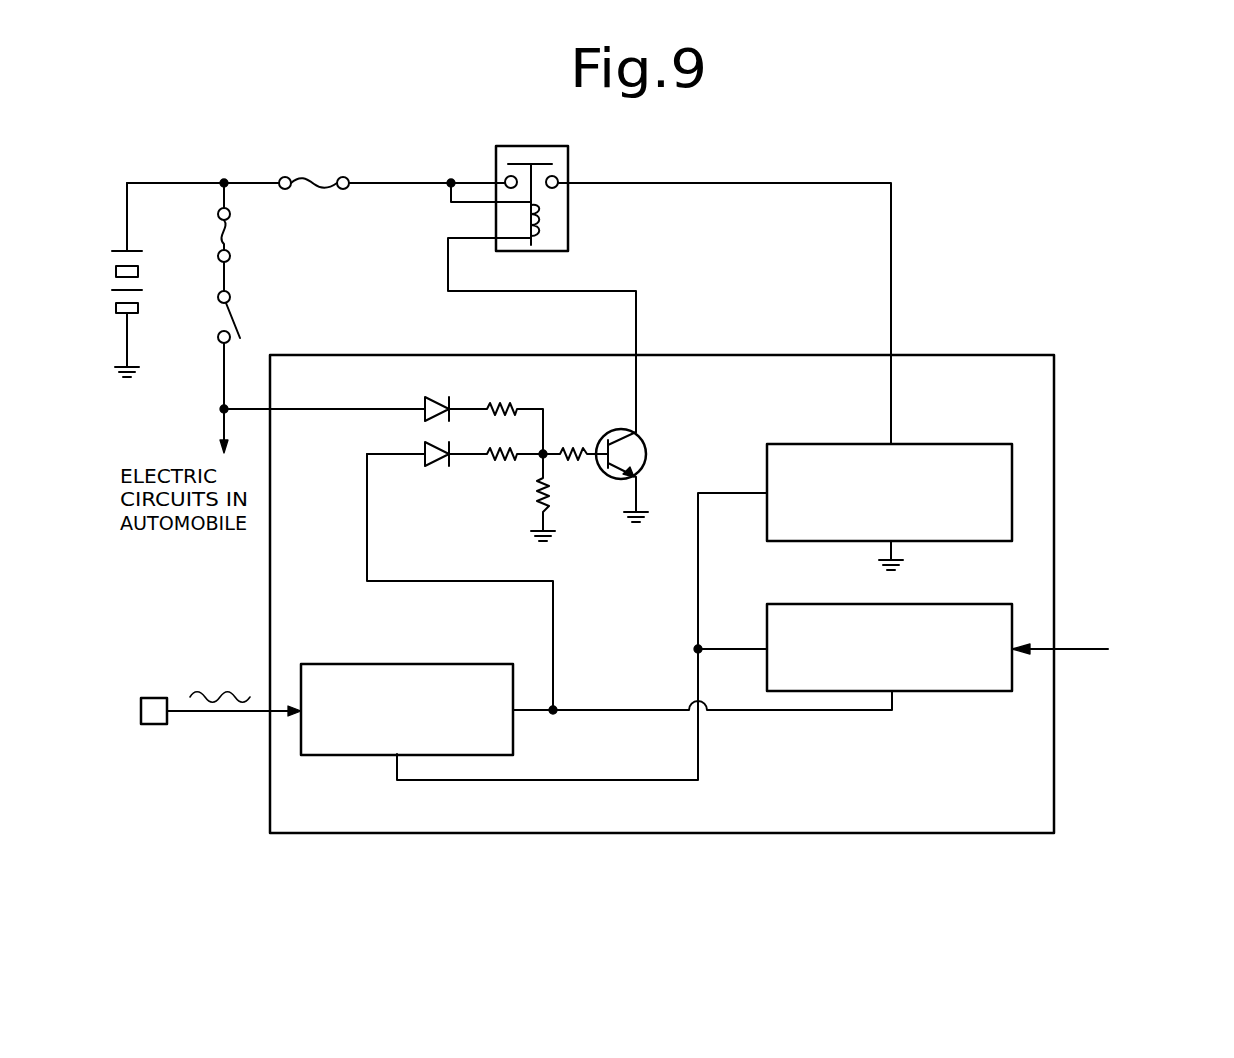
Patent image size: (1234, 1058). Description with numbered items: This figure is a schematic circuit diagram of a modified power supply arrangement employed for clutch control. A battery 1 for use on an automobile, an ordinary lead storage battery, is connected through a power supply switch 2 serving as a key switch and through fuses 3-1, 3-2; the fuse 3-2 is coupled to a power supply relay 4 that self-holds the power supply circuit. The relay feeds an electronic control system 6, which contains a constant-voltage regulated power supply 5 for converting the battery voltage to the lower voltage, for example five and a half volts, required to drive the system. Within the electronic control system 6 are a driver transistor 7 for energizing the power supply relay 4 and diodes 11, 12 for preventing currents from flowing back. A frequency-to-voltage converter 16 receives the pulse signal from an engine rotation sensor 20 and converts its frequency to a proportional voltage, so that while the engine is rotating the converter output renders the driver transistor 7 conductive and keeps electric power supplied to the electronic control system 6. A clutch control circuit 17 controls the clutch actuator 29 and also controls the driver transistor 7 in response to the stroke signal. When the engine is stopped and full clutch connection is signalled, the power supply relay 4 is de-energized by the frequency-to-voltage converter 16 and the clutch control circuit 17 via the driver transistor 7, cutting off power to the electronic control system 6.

The battery 1 is at (143, 280).
The power supply switch 2 is at (243, 318).
The fuse 3-1 is at (237, 233).
The fuse 3-2 is at (316, 175).
The power supply relay 4 is at (568, 148).
The constant-voltage regulated power supply 5 is at (937, 445).
The electronic control system 6 is at (984, 354).
The driver transistor 7 is at (648, 450).
The diode 11 is at (425, 400).
The diode 12 is at (428, 465).
The frequency-to-voltage converter 16 is at (397, 664).
The clutch control circuit 17 is at (922, 693).
The engine rotation sensor 20 is at (149, 698).
The clutch actuator 29 is at (1119, 656).